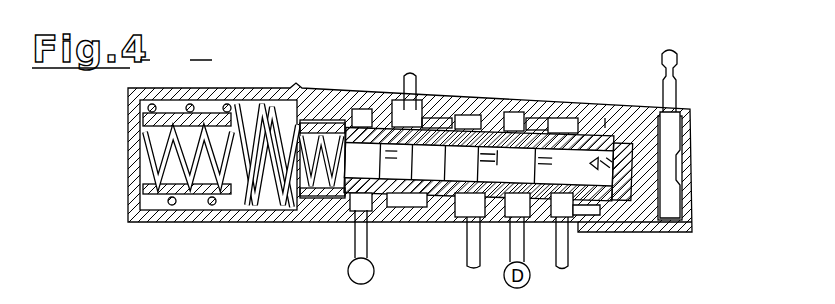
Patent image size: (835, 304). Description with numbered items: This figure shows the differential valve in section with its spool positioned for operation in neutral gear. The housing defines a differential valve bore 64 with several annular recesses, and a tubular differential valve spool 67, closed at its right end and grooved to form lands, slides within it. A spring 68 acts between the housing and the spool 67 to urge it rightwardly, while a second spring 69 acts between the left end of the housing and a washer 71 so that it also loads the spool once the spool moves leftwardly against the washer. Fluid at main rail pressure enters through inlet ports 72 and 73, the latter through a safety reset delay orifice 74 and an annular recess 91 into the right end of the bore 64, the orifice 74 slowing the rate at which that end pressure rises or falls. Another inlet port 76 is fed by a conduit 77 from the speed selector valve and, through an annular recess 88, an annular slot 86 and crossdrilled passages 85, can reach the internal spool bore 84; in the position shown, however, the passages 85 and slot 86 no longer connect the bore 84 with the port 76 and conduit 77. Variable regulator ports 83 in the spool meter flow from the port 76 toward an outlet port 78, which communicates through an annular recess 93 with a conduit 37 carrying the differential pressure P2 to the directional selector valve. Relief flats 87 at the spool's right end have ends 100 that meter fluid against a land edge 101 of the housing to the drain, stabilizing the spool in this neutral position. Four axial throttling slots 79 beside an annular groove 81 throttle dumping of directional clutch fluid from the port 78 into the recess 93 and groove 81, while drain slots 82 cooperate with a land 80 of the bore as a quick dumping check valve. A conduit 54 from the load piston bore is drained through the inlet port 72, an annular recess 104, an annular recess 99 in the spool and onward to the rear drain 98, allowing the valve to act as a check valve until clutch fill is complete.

The conduit 37 is at (466, 264).
The conduit 54 is at (416, 80).
The differential valve bore 64 is at (660, 202).
The differential valve spool 67 is at (540, 112).
The spring 68 is at (152, 162).
The second spring 69 is at (222, 210).
The washer 71 is at (286, 102).
The inlet port 72 is at (422, 114).
The inlet port 73 is at (688, 112).
The safety reset delay orifice 74 is at (677, 80).
The inlet port 76 is at (570, 228).
The conduit 77 is at (556, 246).
The outlet port 78 is at (464, 222).
The axial throttling slots 79 is at (474, 164).
The land 80 is at (358, 110).
The annular groove 81 is at (410, 207).
The drain slots 82 is at (428, 163).
The ports 83 is at (586, 163).
The interior region 84 is at (370, 161).
The crossdrilled outlet passages 85 is at (528, 166).
The annular slot 86 is at (512, 122).
The relief flats 87 is at (618, 135).
The annular recess 88 is at (570, 120).
The annular recess 91 is at (680, 212).
The annular recess 93 is at (463, 115).
The rear drain 98 is at (348, 272).
The annular recess 99 is at (352, 210).
The ends of the flats 100 is at (606, 118).
The land edge 101 is at (598, 226).
The annular recess 104 is at (401, 109).
The hydraulic fluid pressure P2 is at (480, 250).